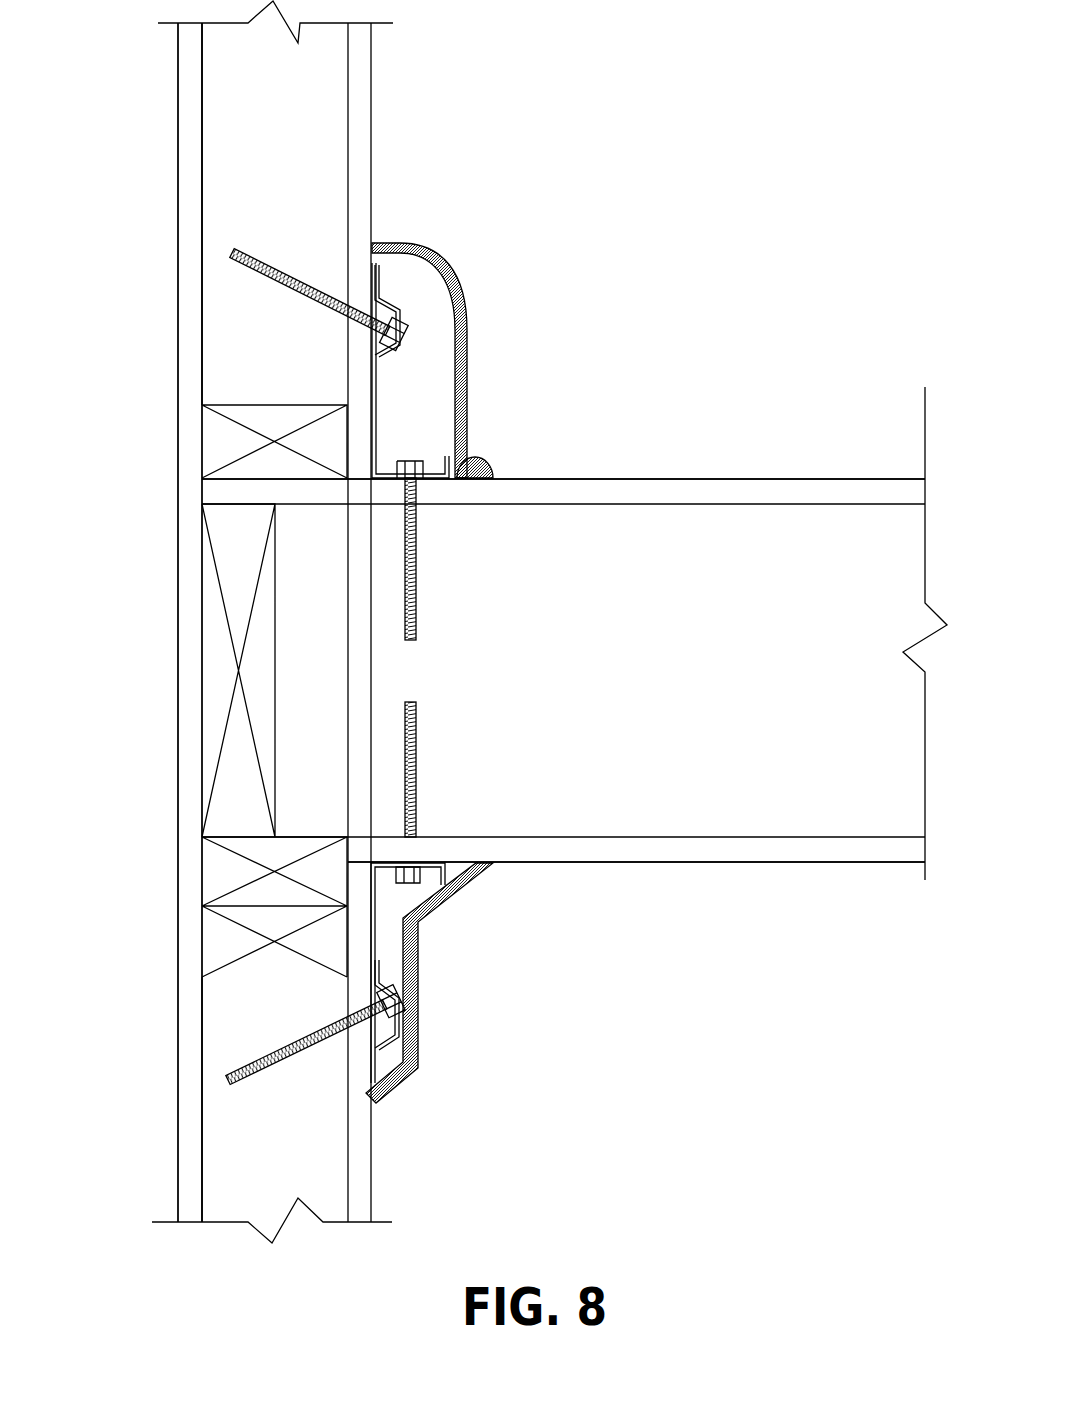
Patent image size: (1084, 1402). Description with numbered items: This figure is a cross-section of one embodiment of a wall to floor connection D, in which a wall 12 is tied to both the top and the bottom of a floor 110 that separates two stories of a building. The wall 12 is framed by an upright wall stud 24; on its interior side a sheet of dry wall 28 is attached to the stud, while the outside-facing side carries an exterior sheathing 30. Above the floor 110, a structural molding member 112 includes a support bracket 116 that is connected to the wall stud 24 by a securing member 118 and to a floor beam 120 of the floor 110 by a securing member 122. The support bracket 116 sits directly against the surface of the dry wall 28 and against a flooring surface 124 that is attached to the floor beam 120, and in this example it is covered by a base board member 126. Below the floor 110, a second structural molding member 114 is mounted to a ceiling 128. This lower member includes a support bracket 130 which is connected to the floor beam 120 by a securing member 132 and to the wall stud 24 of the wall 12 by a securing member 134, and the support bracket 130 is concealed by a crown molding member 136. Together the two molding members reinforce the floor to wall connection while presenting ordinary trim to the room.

The wall 12 is at (238, 120).
The wall stud 24 is at (248, 358).
The dry wall 28 is at (360, 68).
The exterior sheathing 30 is at (192, 223).
The floor 110 is at (795, 523).
The structural molding member 112 is at (424, 391).
The structural molding member 114 is at (417, 935).
The support bracket 116 is at (377, 421).
The securing member 118 is at (287, 273).
The floor beam 120 is at (574, 671).
The securing member 122 is at (418, 590).
The flooring surface 124 is at (627, 493).
The base board member 126 is at (466, 308).
The ceiling 128 is at (725, 848).
The support bracket 130 is at (373, 955).
The securing member 132 is at (418, 748).
The securing member 134 is at (298, 1050).
The crown molding member 136 is at (450, 890).
The wall to floor connection D is at (643, 259).